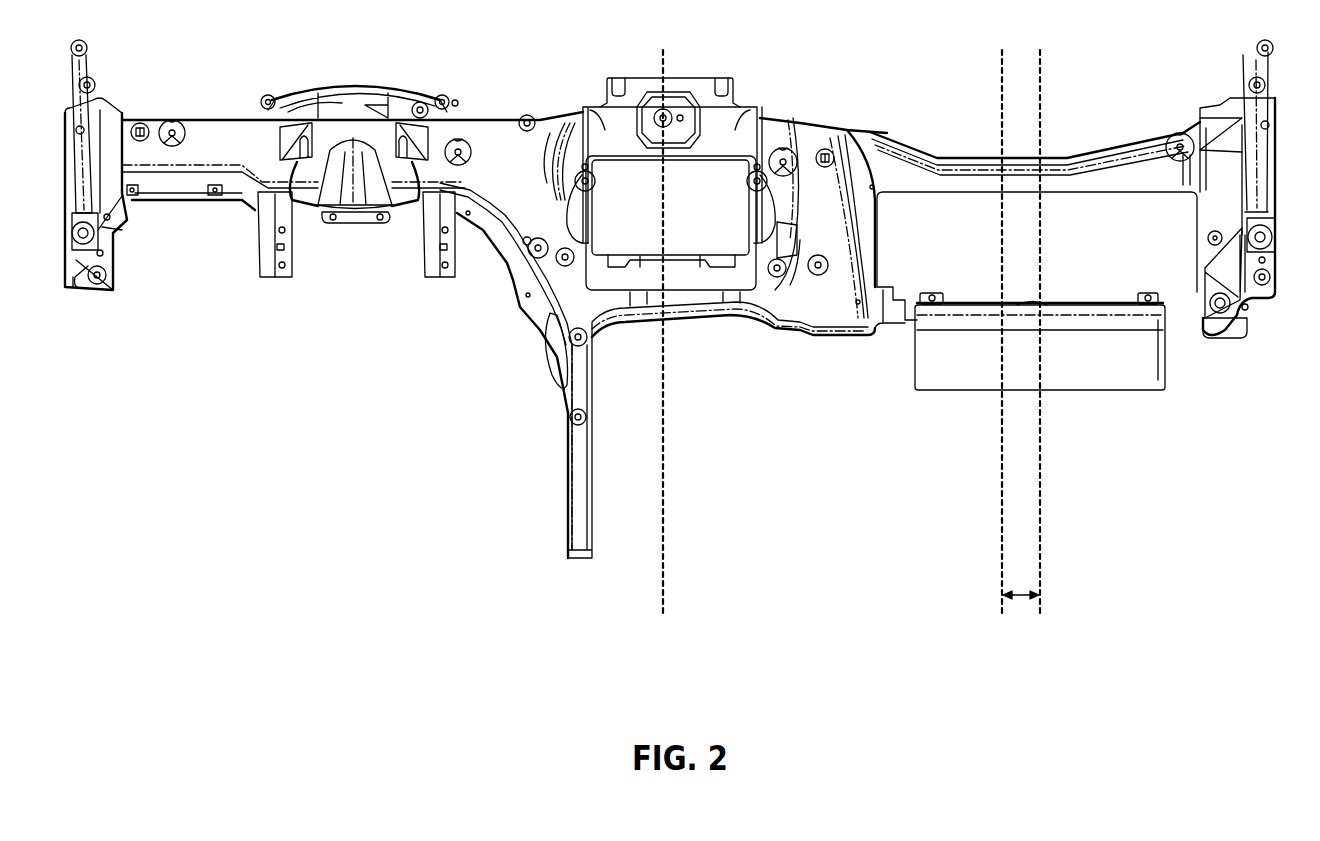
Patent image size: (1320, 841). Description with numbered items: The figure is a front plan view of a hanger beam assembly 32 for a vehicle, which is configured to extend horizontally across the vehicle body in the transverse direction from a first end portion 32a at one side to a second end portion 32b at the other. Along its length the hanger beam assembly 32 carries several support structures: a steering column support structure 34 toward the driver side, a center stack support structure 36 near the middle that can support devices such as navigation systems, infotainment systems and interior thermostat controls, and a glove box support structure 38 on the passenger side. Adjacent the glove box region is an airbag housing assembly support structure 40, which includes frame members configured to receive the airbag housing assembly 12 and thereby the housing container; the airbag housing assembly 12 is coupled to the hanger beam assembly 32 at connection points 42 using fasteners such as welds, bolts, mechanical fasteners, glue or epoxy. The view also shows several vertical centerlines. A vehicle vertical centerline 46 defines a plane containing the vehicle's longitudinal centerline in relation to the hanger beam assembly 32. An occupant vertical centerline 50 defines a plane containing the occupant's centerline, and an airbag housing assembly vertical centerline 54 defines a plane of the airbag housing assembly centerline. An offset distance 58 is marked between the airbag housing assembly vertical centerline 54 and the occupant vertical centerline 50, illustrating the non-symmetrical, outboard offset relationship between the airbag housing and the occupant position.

The airbag housing assembly 12 is at (1115, 392).
The hanger beam assembly 32 is at (202, 118).
The first end portion 32a is at (97, 294).
The second end portion 32b is at (1258, 302).
The steering column support structure 34 is at (360, 225).
The center stack support structure 36 is at (758, 115).
The glove box support structure 38 is at (1147, 136).
The airbag housing assembly support structure 40 is at (905, 322).
The connection points 42 is at (932, 293).
The vehicle vertical centerline 46 is at (665, 527).
The occupant vertical centerline 50 is at (1000, 525).
The airbag housing assembly vertical centerline 54 is at (1042, 565).
The offset distance 58 is at (1018, 600).